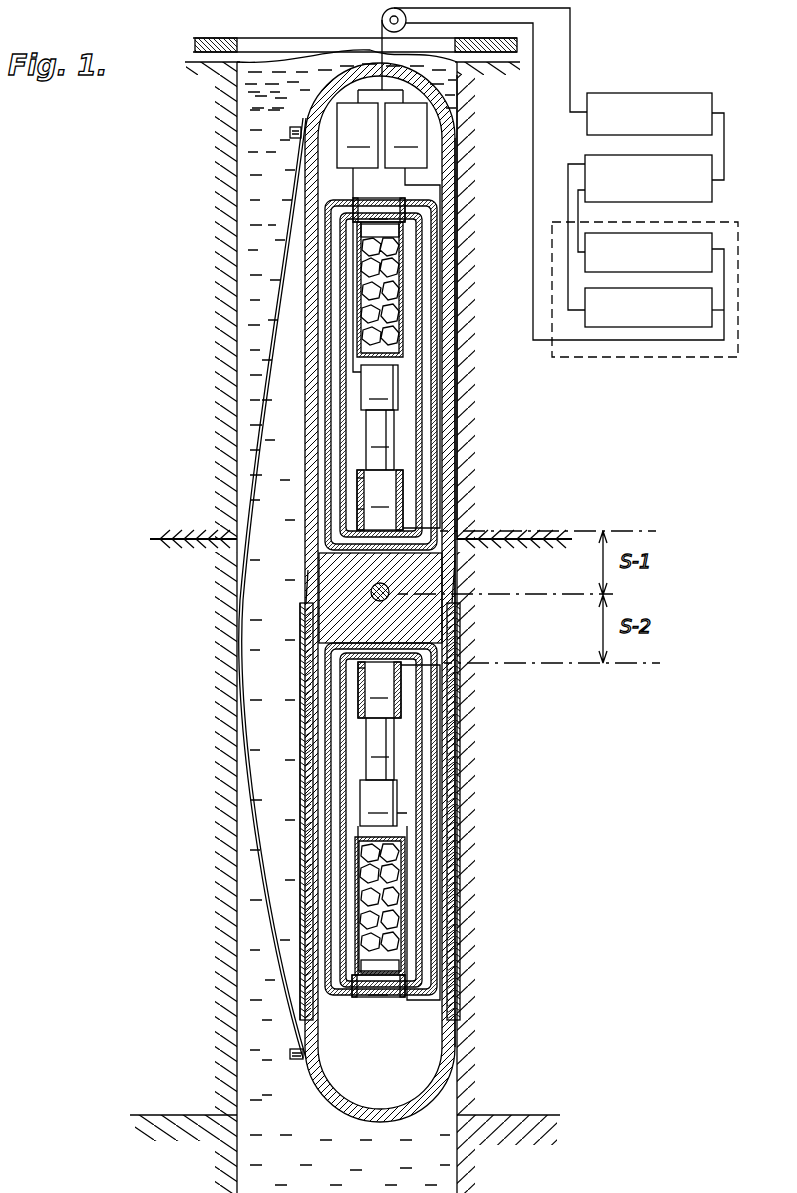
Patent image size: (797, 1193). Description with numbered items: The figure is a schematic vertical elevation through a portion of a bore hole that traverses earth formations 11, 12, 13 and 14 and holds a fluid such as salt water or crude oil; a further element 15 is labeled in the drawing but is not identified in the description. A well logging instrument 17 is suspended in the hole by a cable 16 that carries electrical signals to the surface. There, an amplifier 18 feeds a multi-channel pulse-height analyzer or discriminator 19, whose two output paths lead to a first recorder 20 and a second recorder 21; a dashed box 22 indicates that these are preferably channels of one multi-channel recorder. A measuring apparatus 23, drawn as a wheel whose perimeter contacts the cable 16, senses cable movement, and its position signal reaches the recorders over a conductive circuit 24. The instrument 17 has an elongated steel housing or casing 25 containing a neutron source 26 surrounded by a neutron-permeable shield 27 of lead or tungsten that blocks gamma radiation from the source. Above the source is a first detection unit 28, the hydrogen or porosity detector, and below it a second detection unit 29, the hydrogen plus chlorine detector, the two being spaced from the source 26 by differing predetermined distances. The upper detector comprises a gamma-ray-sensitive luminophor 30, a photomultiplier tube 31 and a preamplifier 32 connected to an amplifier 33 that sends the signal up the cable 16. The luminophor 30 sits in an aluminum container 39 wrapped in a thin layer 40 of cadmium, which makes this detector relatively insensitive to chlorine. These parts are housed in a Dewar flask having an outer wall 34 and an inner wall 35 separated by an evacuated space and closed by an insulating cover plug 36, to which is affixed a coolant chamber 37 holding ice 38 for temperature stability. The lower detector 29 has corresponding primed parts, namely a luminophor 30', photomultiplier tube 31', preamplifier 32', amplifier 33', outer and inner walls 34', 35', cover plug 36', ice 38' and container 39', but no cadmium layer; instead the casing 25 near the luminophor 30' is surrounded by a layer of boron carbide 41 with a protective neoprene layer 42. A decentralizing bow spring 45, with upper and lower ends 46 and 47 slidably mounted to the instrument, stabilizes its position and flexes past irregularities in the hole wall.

The earth formation 11 is at (222, 38).
The earth formation 12 is at (195, 167).
The earth formation 13 is at (190, 686).
The earth formation 14 is at (186, 1150).
The borehole liquid 15 is at (246, 93).
The cable 16 is at (372, 52).
The well logging instrument 17 is at (458, 104).
The amplifier 18 is at (645, 93).
The discriminator 19 is at (658, 158).
The recorder 20 is at (636, 233).
The recorder 21 is at (648, 292).
The dashed box 22 is at (726, 222).
The measuring apparatus 23 is at (382, 18).
The conductive circuit 24 is at (534, 156).
The housing 25 is at (455, 184).
The neutron source 26 is at (383, 583).
The neutron-permeable shield 27 is at (335, 588).
The first radiation detection unit 28 is at (322, 432).
The second detection unit 29 is at (448, 818).
The luminophor 30 is at (380, 500).
The luminophor 30' is at (399, 831).
The photomultiplier tube 31 is at (380, 440).
The photomultiplier tube 31' is at (380, 749).
The preamplifier 32 is at (379, 387).
The preamplifier 32' is at (382, 877).
The amplifier 33 is at (357, 150).
The amplifier 33' is at (412, 315).
The outer wall 34 is at (343, 375).
The outer wall 34' is at (433, 820).
The inner wall 35 is at (352, 375).
The inner wall 35' is at (426, 819).
The insulating cover plug 36 is at (379, 285).
The insulating cover plug 36' is at (378, 986).
The coolant chamber 37 is at (358, 318).
The ice 38 is at (337, 291).
The ice 38' is at (337, 906).
The aluminum container 39 is at (313, 491).
The aluminum container 39' is at (311, 676).
The layer of neutron absorbing material 40 is at (357, 509).
The layer of boron carbide 41 is at (310, 722).
The protective layer 42 is at (300, 755).
The decentralizing bow spring 45 is at (256, 873).
The upper end 46 is at (292, 136).
The lower end 47 is at (294, 1059).